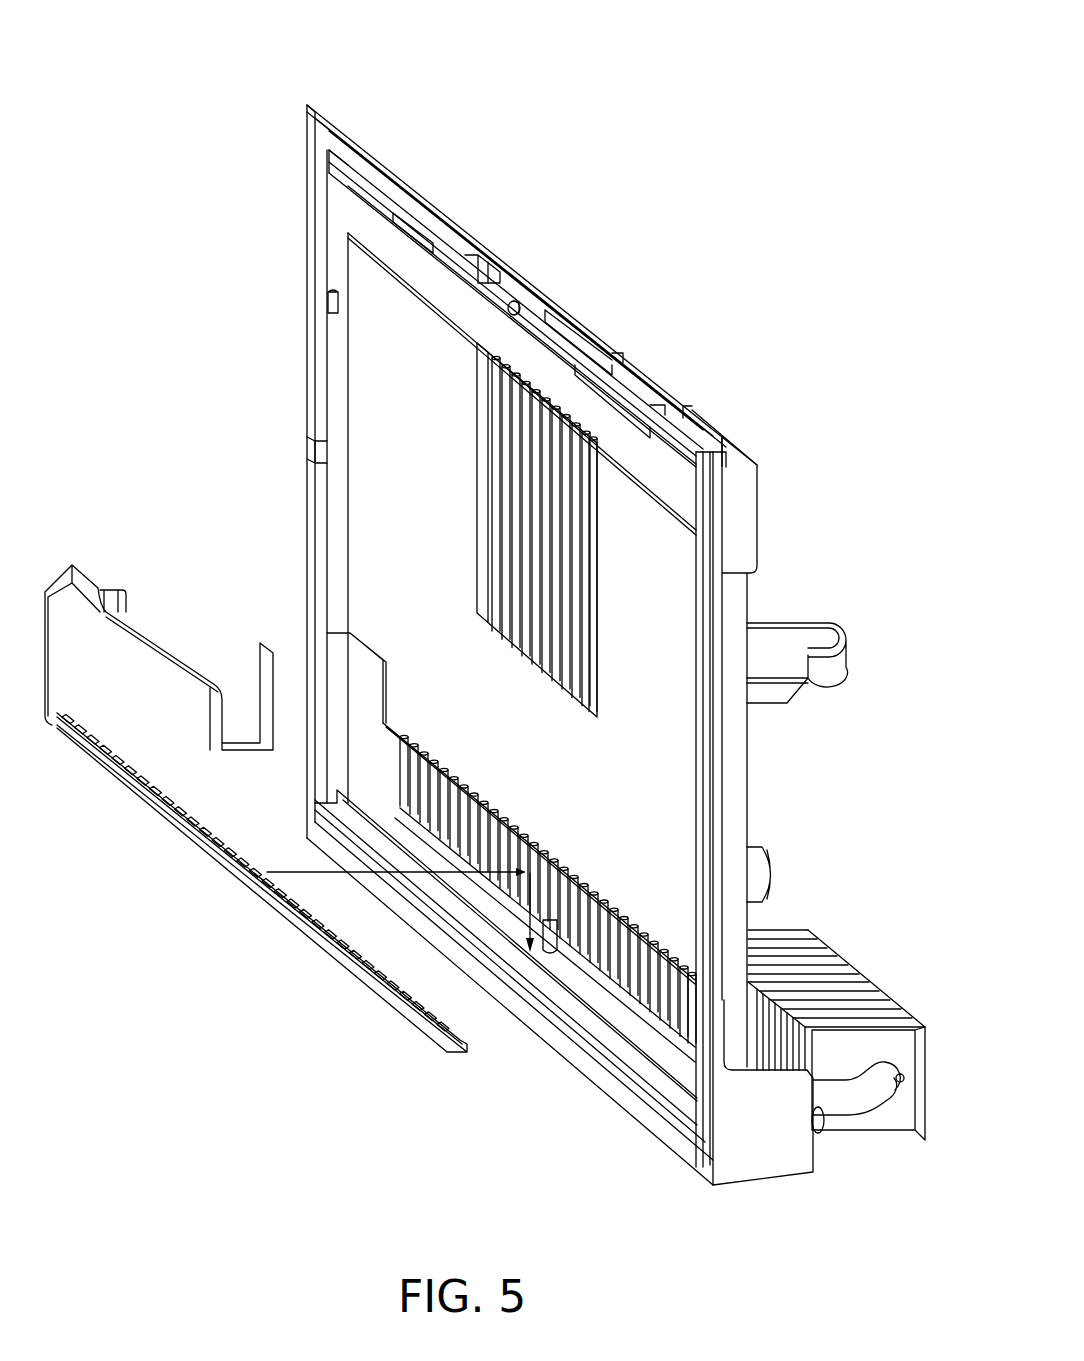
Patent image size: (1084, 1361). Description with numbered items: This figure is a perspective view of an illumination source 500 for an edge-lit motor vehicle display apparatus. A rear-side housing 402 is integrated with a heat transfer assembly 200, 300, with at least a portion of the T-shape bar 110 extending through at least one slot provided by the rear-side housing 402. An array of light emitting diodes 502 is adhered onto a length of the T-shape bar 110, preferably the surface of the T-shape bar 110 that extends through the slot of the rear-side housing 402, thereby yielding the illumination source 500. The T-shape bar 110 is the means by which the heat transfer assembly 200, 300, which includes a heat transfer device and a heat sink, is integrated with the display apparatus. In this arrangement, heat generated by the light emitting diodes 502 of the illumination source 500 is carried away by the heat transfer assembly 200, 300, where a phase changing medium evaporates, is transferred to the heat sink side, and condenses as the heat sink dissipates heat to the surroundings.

The illumination source 500 is at (192, 130).
The rear-side housing 402 is at (427, 190).
The array of light emitting diodes (LEDs) 502 is at (183, 823).
The T-shape bar 110 is at (645, 1043).
The heat transfer assembly 200 is at (948, 1012).
The heat transfer assembly 300 is at (883, 1030).